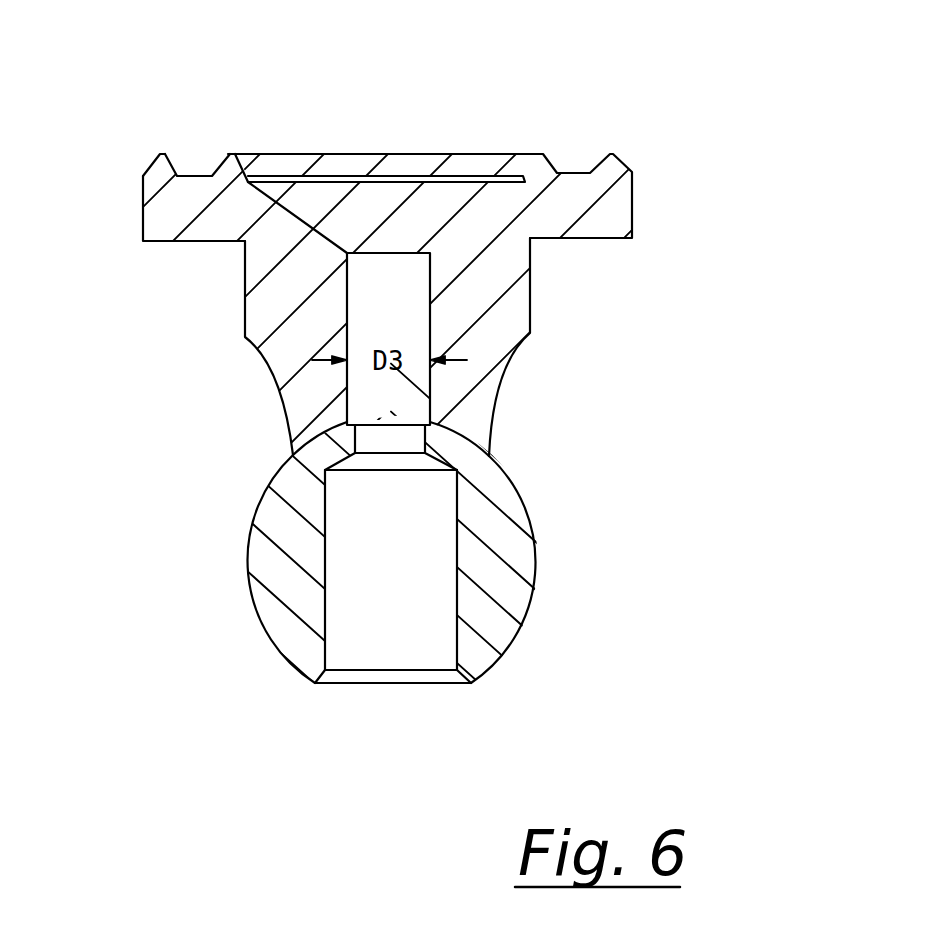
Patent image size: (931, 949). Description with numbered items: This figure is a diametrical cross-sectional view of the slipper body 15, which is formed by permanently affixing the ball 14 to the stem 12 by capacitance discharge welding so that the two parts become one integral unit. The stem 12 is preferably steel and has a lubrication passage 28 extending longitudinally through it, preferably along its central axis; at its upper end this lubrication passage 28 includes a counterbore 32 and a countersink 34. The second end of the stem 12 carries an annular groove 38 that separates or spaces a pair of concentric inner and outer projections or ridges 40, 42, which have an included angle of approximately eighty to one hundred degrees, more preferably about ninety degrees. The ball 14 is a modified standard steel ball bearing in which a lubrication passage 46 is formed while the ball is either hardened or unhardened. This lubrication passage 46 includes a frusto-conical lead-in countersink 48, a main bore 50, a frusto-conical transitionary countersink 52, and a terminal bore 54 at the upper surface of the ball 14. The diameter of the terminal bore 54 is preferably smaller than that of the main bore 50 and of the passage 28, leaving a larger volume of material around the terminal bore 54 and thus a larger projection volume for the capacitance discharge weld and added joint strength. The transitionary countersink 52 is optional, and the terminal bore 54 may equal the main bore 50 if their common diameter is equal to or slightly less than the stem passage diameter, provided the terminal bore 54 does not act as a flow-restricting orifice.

The stem 12 is at (645, 168).
The ball 14 is at (553, 597).
The slipper body 15 is at (550, 391).
The lubrication passage 28 is at (430, 307).
The counterbore 32 is at (250, 181).
The countersink 34 is at (245, 293).
The annular groove 38 is at (193, 176).
The inner projection 40 is at (230, 156).
The outer projection 42 is at (160, 156).
The lubrication passage 46 is at (448, 616).
The frusto-conical lead-in countersink 48 is at (318, 682).
The main bore 50 is at (330, 618).
The frusto-conical transitionary countersink 52 is at (428, 443).
The terminal bore 54 is at (355, 452).